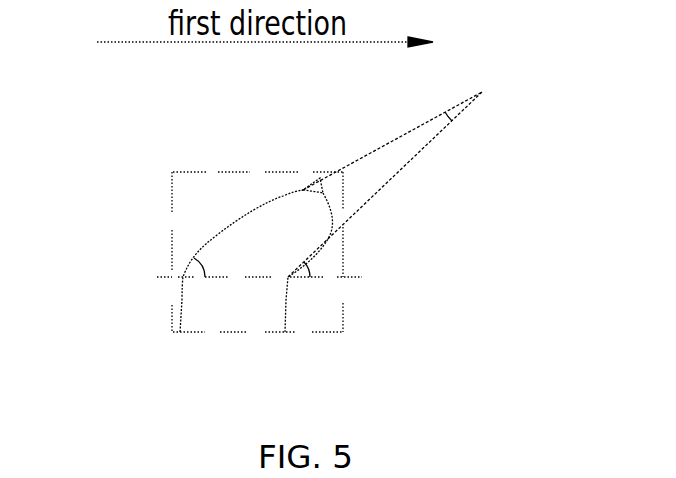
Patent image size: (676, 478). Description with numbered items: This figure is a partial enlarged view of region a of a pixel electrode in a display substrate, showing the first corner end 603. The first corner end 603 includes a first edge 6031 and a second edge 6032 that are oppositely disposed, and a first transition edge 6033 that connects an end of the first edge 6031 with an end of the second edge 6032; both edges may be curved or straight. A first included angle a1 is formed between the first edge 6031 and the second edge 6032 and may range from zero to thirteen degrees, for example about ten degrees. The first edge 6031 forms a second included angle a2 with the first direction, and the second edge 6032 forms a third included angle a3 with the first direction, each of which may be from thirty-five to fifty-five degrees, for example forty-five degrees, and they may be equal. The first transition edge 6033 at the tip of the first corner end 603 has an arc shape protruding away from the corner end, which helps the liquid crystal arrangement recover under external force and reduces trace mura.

The first corner end 603 is at (265, 197).
The first edge 6031 is at (270, 200).
The second edge 6032 is at (333, 228).
The first transition edge 6033 is at (322, 180).
The region a is at (232, 335).
The first included angle a1 is at (449, 117).
The second included angle a2 is at (183, 277).
The third included angle a3 is at (312, 272).